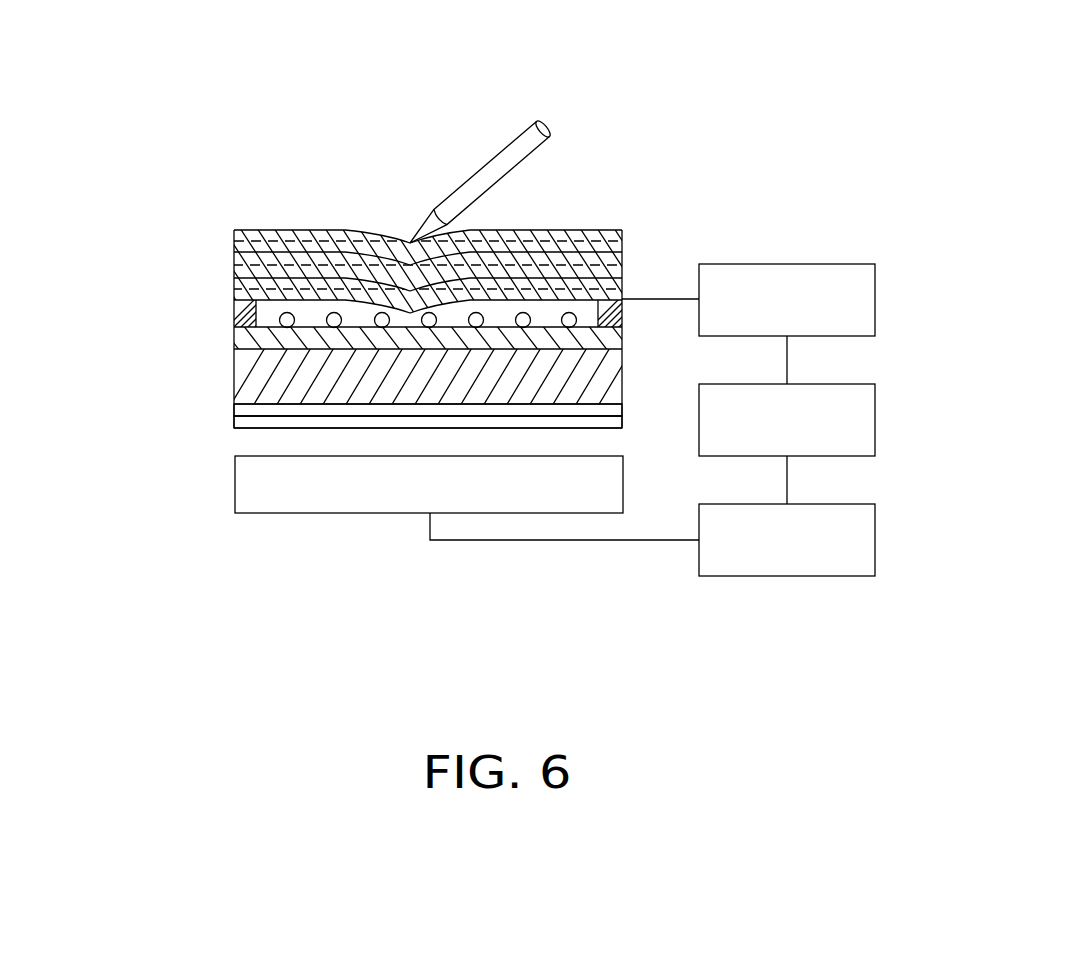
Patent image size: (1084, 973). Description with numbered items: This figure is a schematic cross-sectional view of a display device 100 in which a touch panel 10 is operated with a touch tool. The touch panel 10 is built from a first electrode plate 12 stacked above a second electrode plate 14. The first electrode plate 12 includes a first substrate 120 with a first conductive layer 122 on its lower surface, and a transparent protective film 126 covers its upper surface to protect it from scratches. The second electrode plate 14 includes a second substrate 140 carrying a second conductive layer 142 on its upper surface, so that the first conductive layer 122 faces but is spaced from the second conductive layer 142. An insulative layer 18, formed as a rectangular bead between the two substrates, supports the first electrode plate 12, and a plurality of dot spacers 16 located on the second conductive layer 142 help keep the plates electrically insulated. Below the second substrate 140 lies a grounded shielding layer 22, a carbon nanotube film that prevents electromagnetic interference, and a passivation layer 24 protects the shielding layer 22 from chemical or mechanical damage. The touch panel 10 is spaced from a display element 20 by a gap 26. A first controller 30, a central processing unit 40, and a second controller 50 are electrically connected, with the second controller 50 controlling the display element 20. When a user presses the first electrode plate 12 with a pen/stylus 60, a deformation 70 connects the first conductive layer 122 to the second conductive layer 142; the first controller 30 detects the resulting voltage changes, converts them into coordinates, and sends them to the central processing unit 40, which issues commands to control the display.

The display device 100 is at (535, 38).
The touch panel 10 is at (105, 203).
The first electrode plate 12 is at (150, 240).
The first substrate 120 is at (233, 251).
The first conductive layer 122 is at (233, 285).
The transparent protective film 126 is at (233, 230).
The second electrode plate 14 is at (149, 325).
The second substrate 140 is at (233, 380).
The second conductive layer 142 is at (233, 338).
The dot spacers 16 is at (567, 311).
The insulative layer 18 is at (622, 313).
The display element 20 is at (248, 496).
The shielding layer 22 is at (233, 407).
The passivation layer 24 is at (233, 418).
The gap 26 is at (252, 443).
The first controller 30 is at (867, 308).
The central processing unit 40 is at (867, 415).
The second controller 50 is at (867, 520).
The pen/stylus 60 is at (507, 147).
The deformation 70 is at (410, 243).